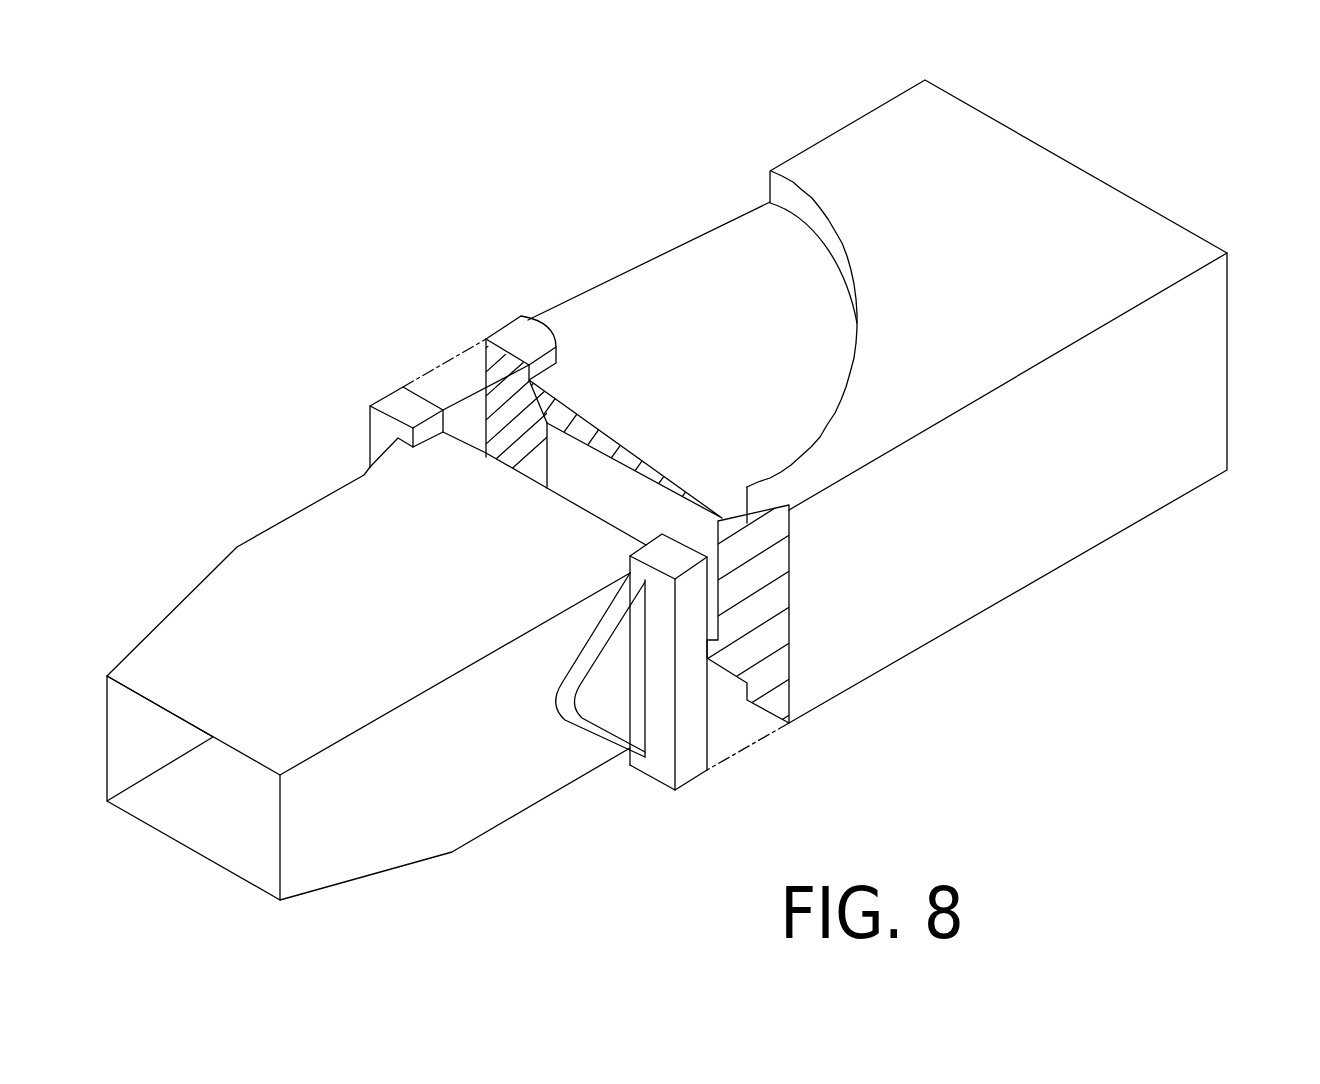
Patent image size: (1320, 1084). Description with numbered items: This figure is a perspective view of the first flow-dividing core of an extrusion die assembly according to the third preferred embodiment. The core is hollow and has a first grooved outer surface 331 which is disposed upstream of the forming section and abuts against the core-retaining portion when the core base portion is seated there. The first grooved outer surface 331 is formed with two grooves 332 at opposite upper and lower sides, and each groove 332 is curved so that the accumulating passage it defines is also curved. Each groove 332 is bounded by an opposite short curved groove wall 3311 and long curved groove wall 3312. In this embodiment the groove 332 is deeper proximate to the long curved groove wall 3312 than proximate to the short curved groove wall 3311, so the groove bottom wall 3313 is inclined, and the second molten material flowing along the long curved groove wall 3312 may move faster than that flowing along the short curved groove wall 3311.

The first grooved outer surface 331 is at (697, 490).
The groove 332 is at (727, 263).
The short curved groove wall 3311 is at (548, 358).
The long curved groove wall 3312 is at (853, 367).
The groove bottom wall 3313 is at (754, 626).